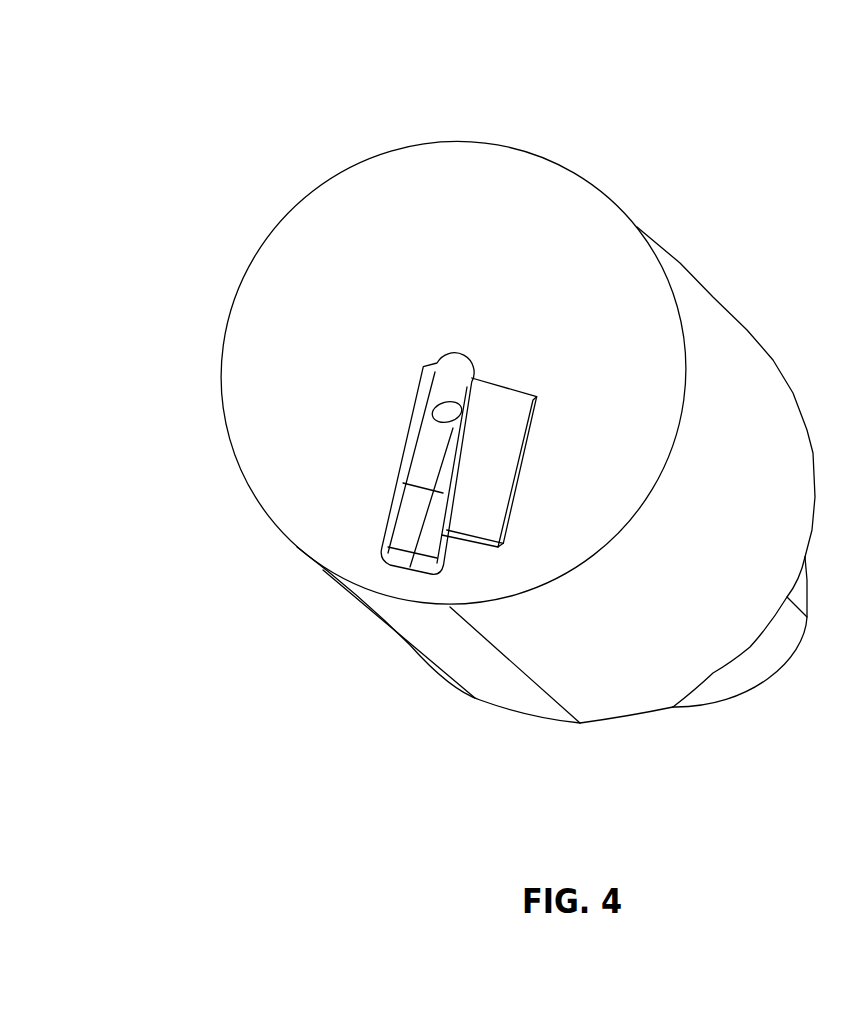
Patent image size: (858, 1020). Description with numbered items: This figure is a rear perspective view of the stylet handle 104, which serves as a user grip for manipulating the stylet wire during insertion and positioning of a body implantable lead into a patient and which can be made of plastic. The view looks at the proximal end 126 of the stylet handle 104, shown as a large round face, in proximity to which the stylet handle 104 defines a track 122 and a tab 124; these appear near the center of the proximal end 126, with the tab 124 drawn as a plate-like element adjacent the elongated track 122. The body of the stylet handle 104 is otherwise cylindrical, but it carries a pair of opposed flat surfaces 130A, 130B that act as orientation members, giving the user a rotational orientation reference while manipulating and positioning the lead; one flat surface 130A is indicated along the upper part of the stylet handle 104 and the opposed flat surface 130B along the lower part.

The stylet handle 104 is at (708, 148).
The proximal end 126 is at (258, 293).
The flat surface 130A is at (508, 150).
The flat surface 130B is at (430, 628).
The track 122 is at (413, 515).
The tab 124 is at (488, 483).